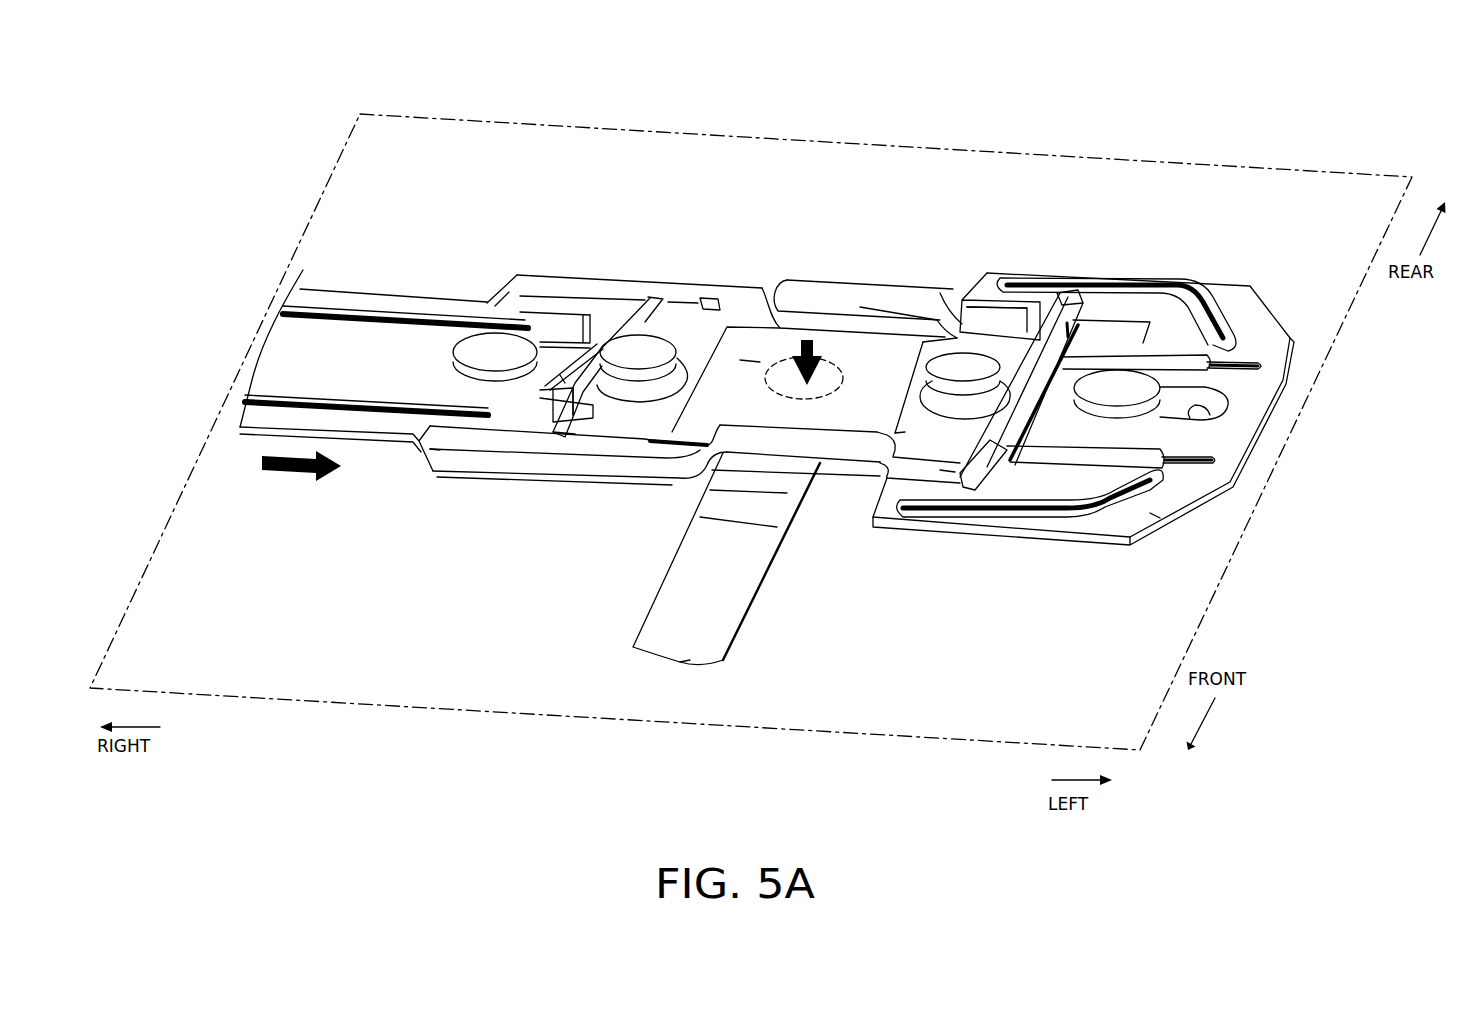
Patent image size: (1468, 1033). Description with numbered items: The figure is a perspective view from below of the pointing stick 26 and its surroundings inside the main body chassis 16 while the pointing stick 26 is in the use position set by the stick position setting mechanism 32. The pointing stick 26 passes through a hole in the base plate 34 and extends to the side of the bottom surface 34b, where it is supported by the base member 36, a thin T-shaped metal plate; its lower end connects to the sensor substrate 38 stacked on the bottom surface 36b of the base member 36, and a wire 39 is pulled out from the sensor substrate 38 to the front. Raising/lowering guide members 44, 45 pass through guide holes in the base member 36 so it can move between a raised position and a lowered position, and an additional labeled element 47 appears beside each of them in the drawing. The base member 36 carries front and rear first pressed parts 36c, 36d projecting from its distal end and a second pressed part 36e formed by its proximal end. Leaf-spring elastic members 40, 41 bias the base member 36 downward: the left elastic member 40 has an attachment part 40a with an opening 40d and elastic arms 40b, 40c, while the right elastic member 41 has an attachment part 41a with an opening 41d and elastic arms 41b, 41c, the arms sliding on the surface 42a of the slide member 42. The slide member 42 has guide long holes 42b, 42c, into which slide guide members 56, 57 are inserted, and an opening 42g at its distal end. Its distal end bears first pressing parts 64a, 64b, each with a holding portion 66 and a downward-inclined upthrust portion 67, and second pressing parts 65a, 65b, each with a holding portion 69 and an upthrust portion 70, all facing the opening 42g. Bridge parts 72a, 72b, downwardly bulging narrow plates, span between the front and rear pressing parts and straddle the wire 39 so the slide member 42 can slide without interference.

The main body chassis 16 is at (311, 49).
The pointing stick 26 is at (843, 360).
The stick position setting mechanism 32 is at (724, 158).
The base plate 34 is at (751, 426).
The bottom surface of the base plate 34b is at (1277, 193).
The base member 36 is at (816, 323).
The bottom surface of the base member 36b is at (710, 430).
The first pressed part 36c is at (972, 455).
The first pressed part 36d is at (1027, 318).
The second pressed part 36e is at (562, 378).
The sensor substrate 38 is at (762, 350).
The wire 39 is at (690, 637).
The elastic member 40 is at (1113, 300).
The attachment part 40a is at (905, 432).
The elastic arm 40b is at (1240, 505).
The elastic arm 40c is at (1170, 362).
The opening 40d is at (945, 470).
The elastic member 41 is at (717, 293).
The attachment part 41a is at (706, 294).
The elastic arm 41b is at (457, 450).
The elastic arm 41c is at (613, 308).
The opening 41d is at (655, 410).
The slide member 42 is at (549, 272).
The surface of the slide member 42a is at (343, 335).
The guide long hole 42b is at (1225, 453).
The guide long hole 42c is at (410, 450).
The opening 42g is at (1150, 513).
The raising/lowering guide member 44 is at (1038, 445).
The raising/lowering guide member 45 is at (615, 420).
The fastening portion 47 is at (827, 524).
The slide guide member 56 is at (1215, 418).
The slide guide member 57 is at (480, 345).
The first pressing part 64a is at (1003, 455).
The first pressing part 64b is at (1070, 308).
The second pressing part 65a is at (560, 420).
The second pressing part 65b is at (643, 323).
The holding portion 66 is at (990, 310).
The upthrust portion 67 is at (1087, 320).
The holding portion 69 is at (610, 323).
The upthrust portion 70 is at (660, 310).
The bridge part 72a is at (780, 443).
The bridge part 72b is at (837, 293).